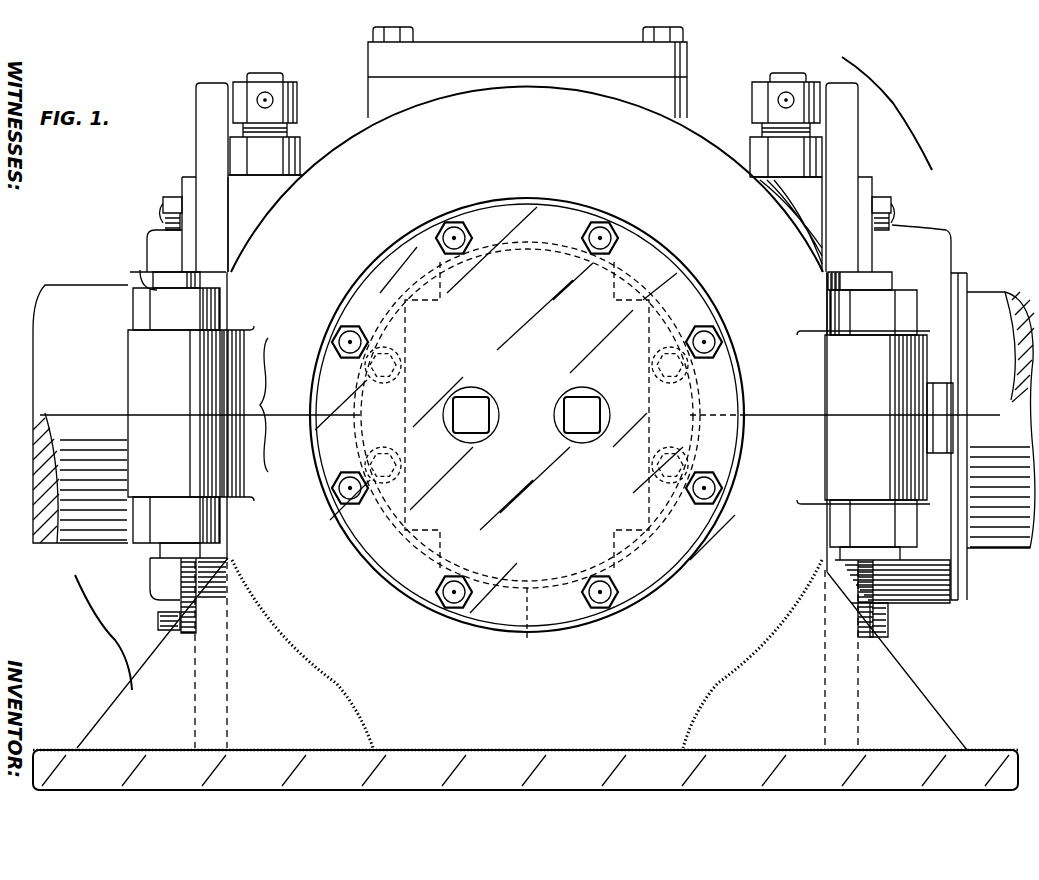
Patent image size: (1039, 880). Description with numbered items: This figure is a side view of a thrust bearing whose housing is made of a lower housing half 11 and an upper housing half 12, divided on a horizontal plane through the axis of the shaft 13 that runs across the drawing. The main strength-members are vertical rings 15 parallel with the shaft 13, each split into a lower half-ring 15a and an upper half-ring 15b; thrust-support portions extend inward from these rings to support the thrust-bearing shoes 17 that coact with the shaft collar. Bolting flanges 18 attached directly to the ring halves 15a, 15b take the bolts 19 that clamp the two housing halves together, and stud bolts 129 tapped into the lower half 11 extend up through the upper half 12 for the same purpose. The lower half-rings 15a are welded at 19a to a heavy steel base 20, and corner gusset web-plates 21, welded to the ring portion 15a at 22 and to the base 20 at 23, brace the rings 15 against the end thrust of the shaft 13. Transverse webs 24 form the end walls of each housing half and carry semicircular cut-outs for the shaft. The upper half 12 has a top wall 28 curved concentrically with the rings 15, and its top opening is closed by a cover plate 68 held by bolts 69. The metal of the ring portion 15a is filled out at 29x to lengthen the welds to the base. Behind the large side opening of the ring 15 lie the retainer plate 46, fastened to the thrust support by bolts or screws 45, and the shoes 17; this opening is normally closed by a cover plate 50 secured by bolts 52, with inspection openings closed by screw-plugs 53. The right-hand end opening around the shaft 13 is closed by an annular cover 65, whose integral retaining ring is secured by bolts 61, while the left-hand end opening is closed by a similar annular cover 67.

The lower housing half 11 is at (101, 632).
The upper housing half 12 is at (990, 300).
The shaft 13 is at (70, 288).
The vertical rings 15 is at (520, 405).
The lower half-ring 15a is at (772, 451).
The upper half-ring 15b is at (775, 365).
The thrust-bearing shoes 17 is at (887, 113).
The bolting flanges 18 is at (135, 426).
The bolts 19 is at (165, 280).
The weld 19a is at (524, 746).
The base 20 is at (525, 770).
The corner gusset web-plates 21 is at (124, 688).
The weld 22 is at (290, 644).
The weld 23 is at (526, 655).
The transverse webs 24 is at (210, 84).
The top wall 28 is at (348, 145).
The filled-out metal 29x is at (376, 742).
The bolts or screws 45 is at (402, 362).
The retainer plate 46 is at (527, 626).
The cover plate 50 is at (540, 212).
The bolts 52 is at (598, 238).
The screw-plugs 53 is at (566, 402).
The bolts 61 is at (170, 196).
The annular cover 65 is at (952, 244).
The annular cover 67 is at (150, 238).
The cover plate 68 is at (527, 80).
The bolts 69 is at (372, 34).
The stud bolts 129 is at (265, 73).